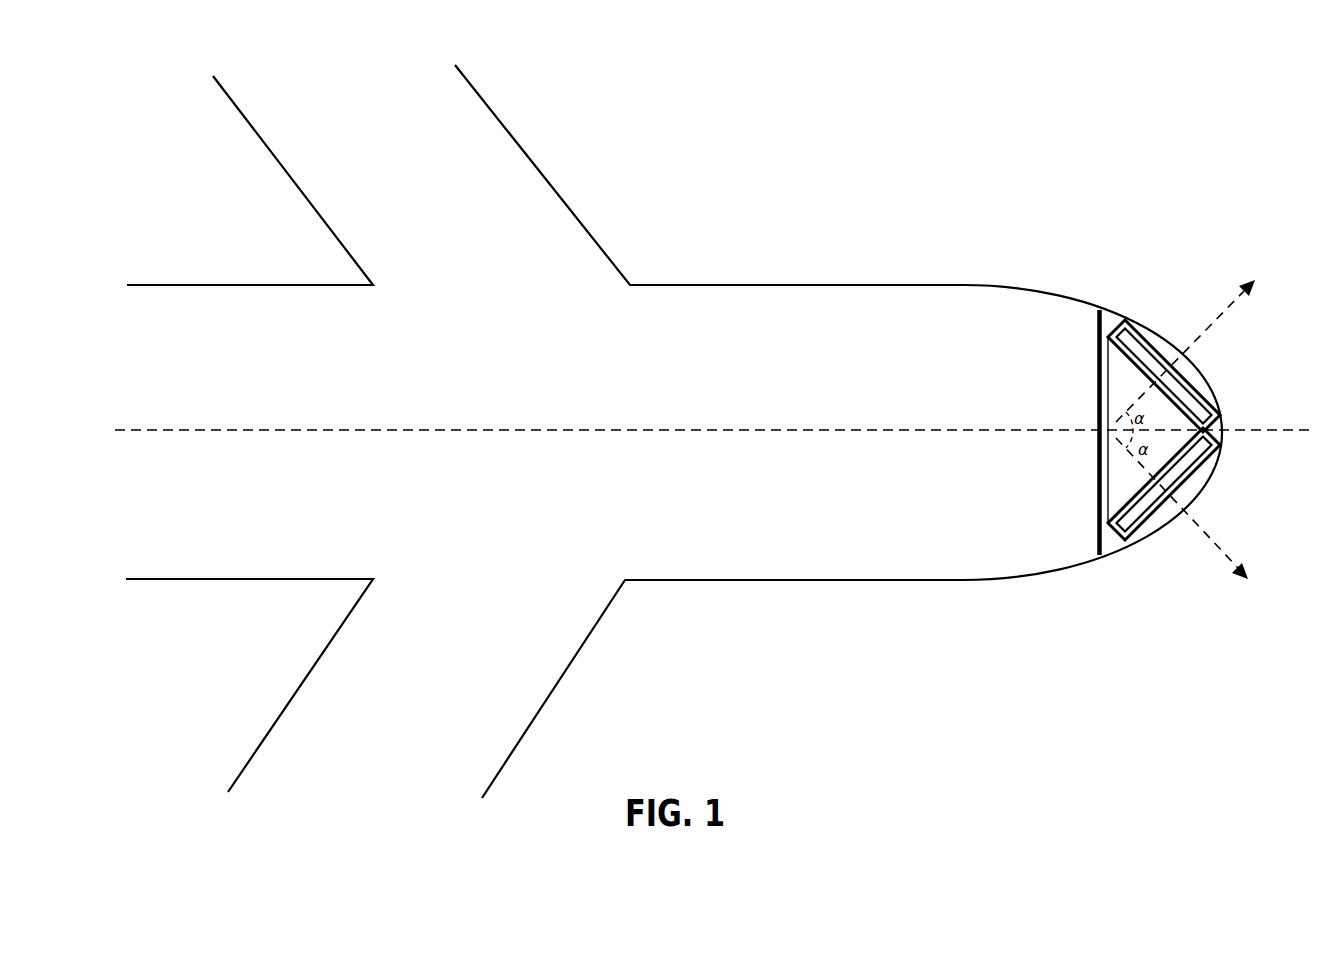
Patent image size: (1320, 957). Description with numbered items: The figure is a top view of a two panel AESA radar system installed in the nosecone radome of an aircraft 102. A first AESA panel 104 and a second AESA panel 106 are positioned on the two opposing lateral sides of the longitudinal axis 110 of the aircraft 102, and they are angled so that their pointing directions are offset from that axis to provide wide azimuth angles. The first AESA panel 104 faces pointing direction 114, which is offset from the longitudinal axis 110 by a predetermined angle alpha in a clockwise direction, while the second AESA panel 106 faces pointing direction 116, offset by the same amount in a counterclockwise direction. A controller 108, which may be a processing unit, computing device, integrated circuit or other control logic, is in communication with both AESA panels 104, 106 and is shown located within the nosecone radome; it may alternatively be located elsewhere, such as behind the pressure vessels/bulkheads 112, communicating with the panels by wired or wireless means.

The aircraft 102 is at (678, 300).
The first AESA panel 104 is at (1143, 508).
The second AESA panel 106 is at (1150, 342).
The controller 108 is at (1113, 482).
The longitudinal axis 110 is at (1255, 430).
The pressure vessels/bulkheads 112 is at (1098, 309).
The pointing direction of the first AESA panel 114 is at (1199, 522).
The pointing direction of the second AESA panel 116 is at (1199, 335).